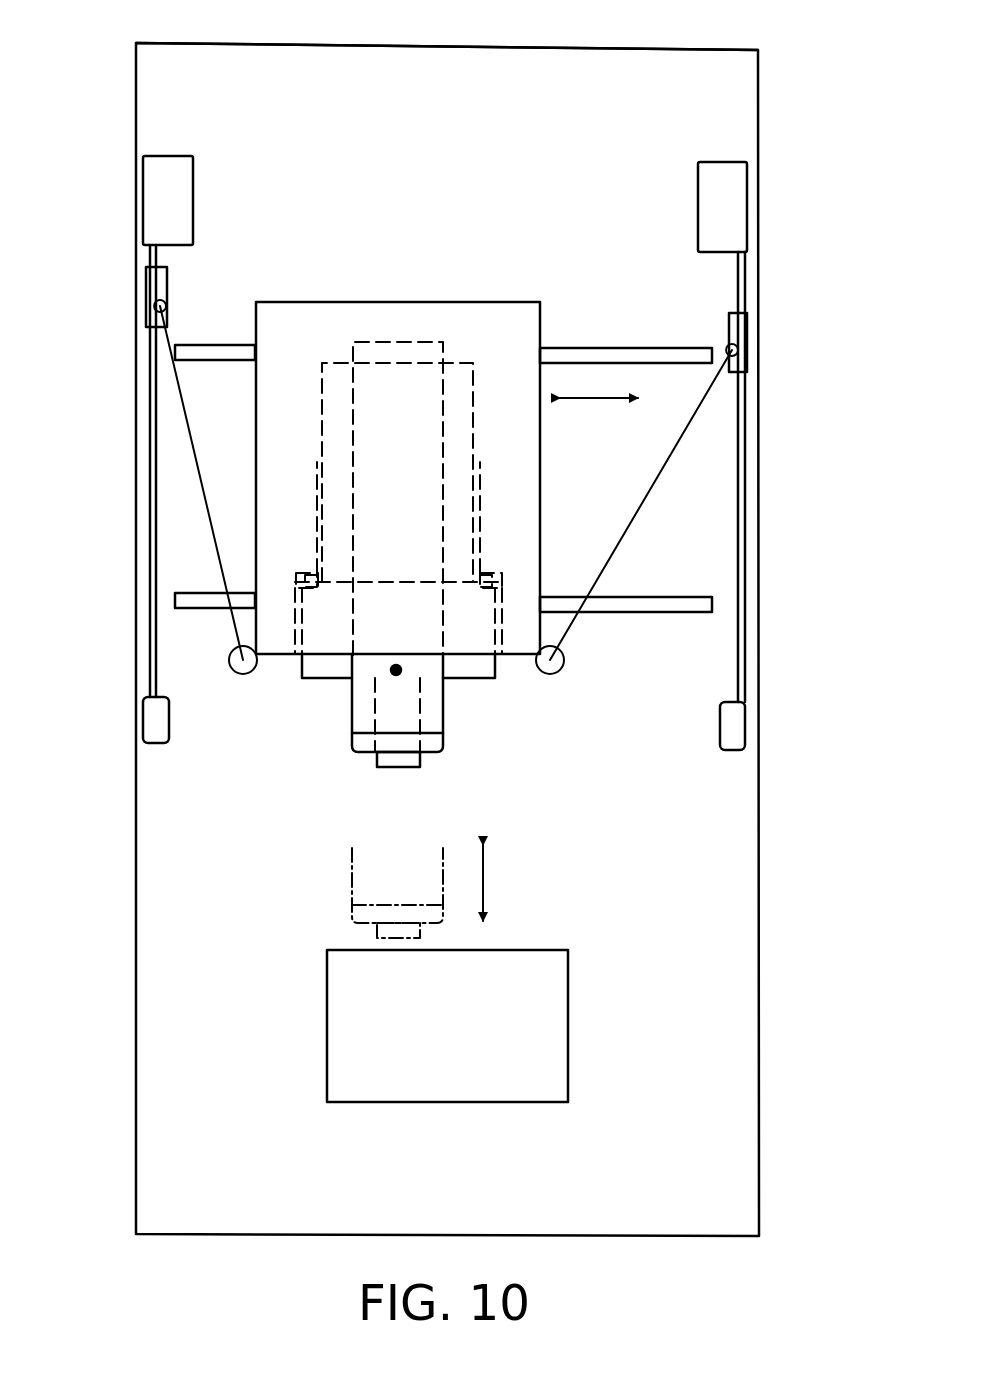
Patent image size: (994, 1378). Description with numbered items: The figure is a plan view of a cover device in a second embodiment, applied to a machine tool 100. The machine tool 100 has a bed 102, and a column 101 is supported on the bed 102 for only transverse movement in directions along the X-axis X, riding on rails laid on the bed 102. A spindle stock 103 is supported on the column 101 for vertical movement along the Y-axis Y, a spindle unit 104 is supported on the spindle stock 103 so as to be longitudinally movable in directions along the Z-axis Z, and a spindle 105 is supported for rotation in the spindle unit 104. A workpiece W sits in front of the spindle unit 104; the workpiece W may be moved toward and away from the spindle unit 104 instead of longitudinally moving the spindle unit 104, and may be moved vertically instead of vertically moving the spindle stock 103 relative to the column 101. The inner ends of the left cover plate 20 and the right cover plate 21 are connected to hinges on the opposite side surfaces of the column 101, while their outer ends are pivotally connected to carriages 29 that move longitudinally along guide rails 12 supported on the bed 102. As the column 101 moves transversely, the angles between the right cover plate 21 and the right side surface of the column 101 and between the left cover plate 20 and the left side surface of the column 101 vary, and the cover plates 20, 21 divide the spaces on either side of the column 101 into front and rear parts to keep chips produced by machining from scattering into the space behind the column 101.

The machine tool 100 is at (764, 93).
The column 101 is at (502, 315).
The bed 102 is at (728, 892).
The spindle stock 103 is at (483, 678).
The spindle unit 104 is at (355, 718).
The spindle 105 is at (410, 768).
The guide rail 12 is at (155, 447).
The left cover plate 20 is at (203, 497).
The right cover plate 21 is at (643, 503).
The carriage 29 is at (146, 310).
The workpiece W is at (332, 1028).
The X-axis X is at (593, 398).
The Y-axis Y is at (392, 673).
The Z-axis Z is at (483, 883).